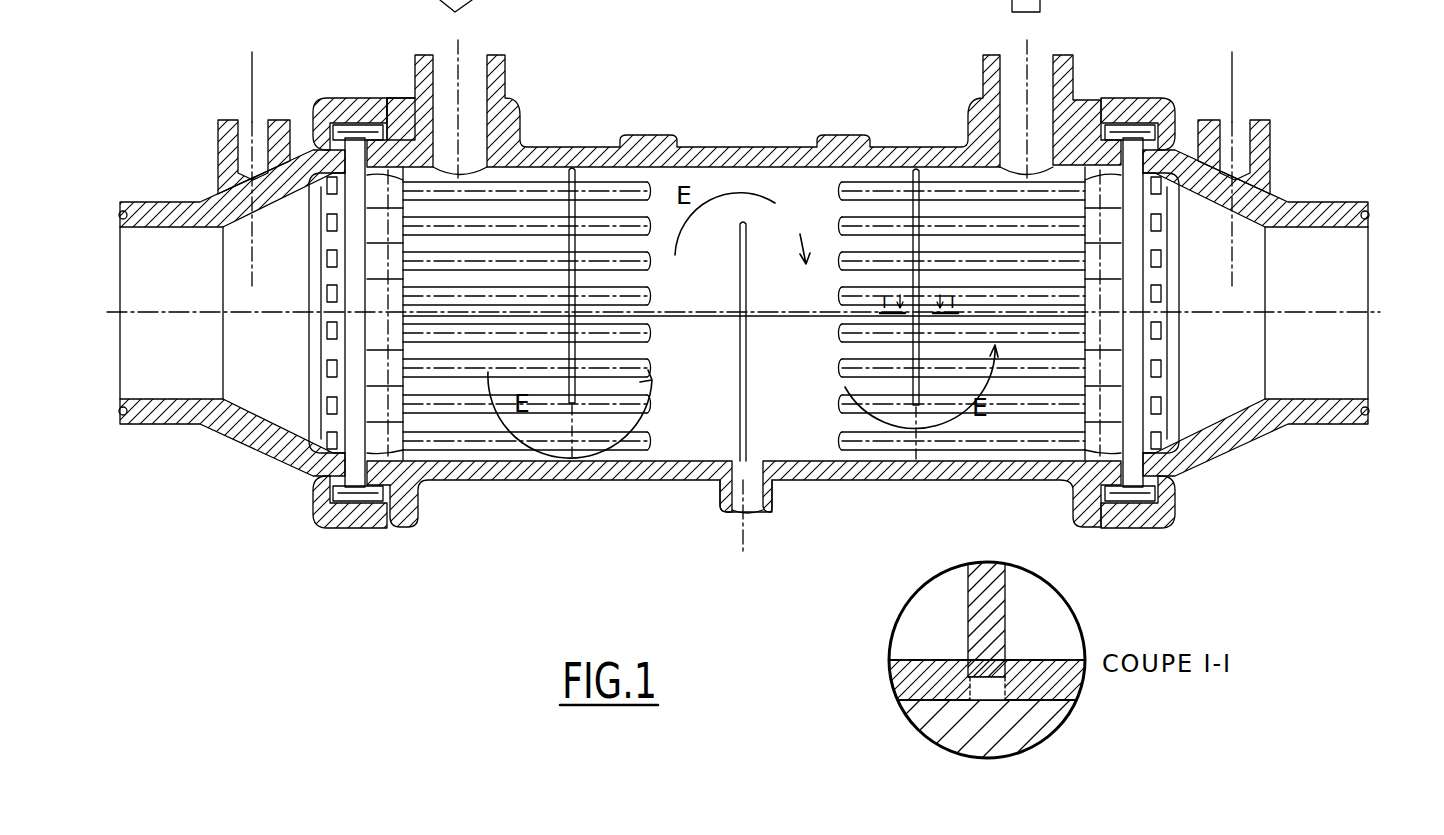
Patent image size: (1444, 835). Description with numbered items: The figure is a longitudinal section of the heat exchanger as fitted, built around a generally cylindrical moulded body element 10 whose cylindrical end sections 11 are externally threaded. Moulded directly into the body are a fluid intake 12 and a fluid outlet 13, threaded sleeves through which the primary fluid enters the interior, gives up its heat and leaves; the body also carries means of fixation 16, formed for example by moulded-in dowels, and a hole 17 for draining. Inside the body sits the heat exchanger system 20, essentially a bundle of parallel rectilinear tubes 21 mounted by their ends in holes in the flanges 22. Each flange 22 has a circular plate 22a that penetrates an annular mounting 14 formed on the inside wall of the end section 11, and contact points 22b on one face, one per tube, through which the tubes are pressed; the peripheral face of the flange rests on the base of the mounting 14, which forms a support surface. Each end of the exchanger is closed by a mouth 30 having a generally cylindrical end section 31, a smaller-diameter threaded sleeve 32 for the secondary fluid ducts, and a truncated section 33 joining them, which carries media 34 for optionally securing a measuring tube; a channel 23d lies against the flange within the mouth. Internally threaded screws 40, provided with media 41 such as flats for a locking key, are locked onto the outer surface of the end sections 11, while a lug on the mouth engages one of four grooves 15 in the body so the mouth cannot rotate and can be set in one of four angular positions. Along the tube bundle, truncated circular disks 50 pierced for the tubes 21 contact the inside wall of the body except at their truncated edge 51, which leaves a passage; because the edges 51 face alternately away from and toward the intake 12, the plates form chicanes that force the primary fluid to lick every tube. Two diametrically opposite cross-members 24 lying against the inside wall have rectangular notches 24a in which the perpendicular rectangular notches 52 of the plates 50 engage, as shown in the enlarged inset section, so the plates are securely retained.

The body element 10 is at (770, 482).
The end section 11 is at (1111, 110).
The fluid intake 12 is at (480, 58).
The fluid outlet 13 is at (985, 74).
The annular mounting 14 is at (390, 104).
The grooves 15 is at (318, 502).
The means of fixation 16 is at (652, 132).
The hole 17 is at (740, 505).
The heat exchanger system 20 is at (613, 140).
The tubes 21 is at (842, 225).
The flange 22 is at (345, 352).
The circular plate 22a is at (350, 100).
The contact points 22b is at (418, 478).
The tube sheet channel 23d is at (315, 278).
The cross-members 24 is at (715, 322).
The rectangular notches 24a is at (965, 668).
The mouth 30 is at (227, 447).
The end section 31 is at (318, 470).
The sleeve 32 is at (164, 443).
The truncated section 33 is at (283, 446).
The media 34 is at (243, 113).
The screws 40 is at (381, 524).
The media 41 is at (312, 128).
The disks 50 is at (571, 185).
The truncated edge 51 is at (920, 478).
The rectangular notches 52 is at (1003, 695).